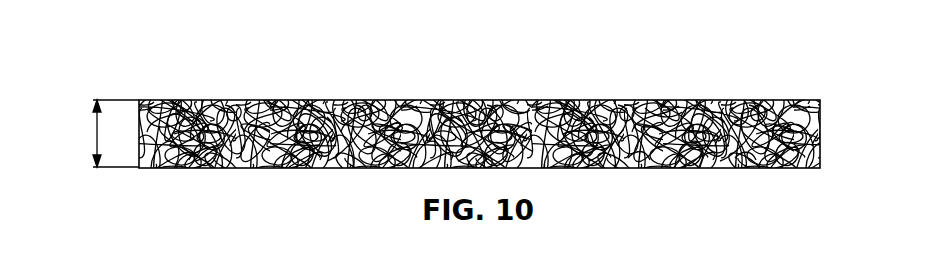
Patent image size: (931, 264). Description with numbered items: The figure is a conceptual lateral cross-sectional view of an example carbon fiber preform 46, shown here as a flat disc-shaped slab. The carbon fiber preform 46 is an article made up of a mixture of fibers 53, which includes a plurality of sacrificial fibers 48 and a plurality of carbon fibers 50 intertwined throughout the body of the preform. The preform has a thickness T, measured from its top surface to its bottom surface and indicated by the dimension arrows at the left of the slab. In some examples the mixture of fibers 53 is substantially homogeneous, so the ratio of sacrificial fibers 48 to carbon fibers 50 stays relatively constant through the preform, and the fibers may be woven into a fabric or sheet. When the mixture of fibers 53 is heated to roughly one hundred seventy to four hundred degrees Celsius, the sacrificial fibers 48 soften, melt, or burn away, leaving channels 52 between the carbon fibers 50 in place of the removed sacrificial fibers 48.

The carbon fiber preform 46 is at (106, 84).
The thickness T is at (104, 133).
The mixture of fibers 53 is at (510, 100).
The channels 52 is at (650, 106).
The carbon fibers 50 is at (640, 158).
The sacrificial fibers 48 is at (745, 160).